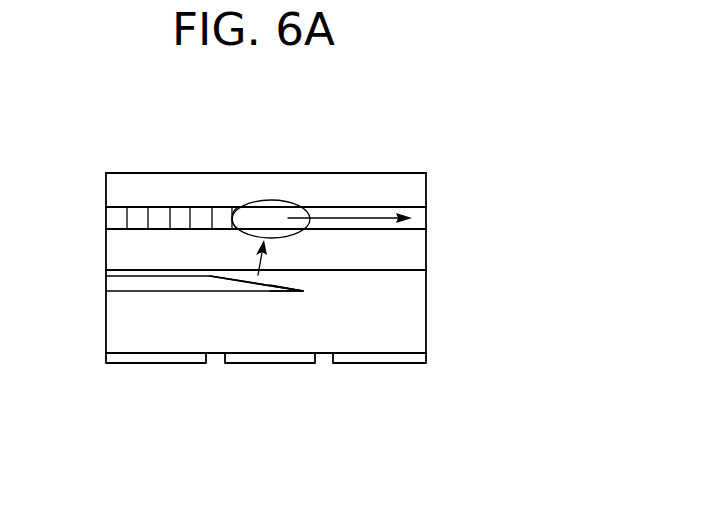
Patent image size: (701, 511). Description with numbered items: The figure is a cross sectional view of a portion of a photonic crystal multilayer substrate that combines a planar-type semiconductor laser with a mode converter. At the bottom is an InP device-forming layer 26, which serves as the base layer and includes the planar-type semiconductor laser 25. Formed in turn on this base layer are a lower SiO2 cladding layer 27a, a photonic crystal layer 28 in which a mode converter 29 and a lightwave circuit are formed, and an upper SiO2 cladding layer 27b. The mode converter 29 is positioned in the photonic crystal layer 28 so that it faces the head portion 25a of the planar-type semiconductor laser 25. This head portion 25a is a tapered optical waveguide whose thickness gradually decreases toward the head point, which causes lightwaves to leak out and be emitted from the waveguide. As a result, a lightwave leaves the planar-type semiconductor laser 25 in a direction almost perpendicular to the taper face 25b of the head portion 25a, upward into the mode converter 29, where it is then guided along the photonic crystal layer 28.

The planar-type semiconductor laser 25 is at (177, 287).
The head portion 25a is at (276, 294).
The taper face 25b is at (275, 287).
The InP device-forming layer 26 is at (120, 320).
The SiO2 cladding layer 27a is at (118, 253).
The SiO2 cladding layer 27b is at (118, 190).
The photonic crystal layer 28 is at (118, 223).
The mode converter 29 is at (260, 190).